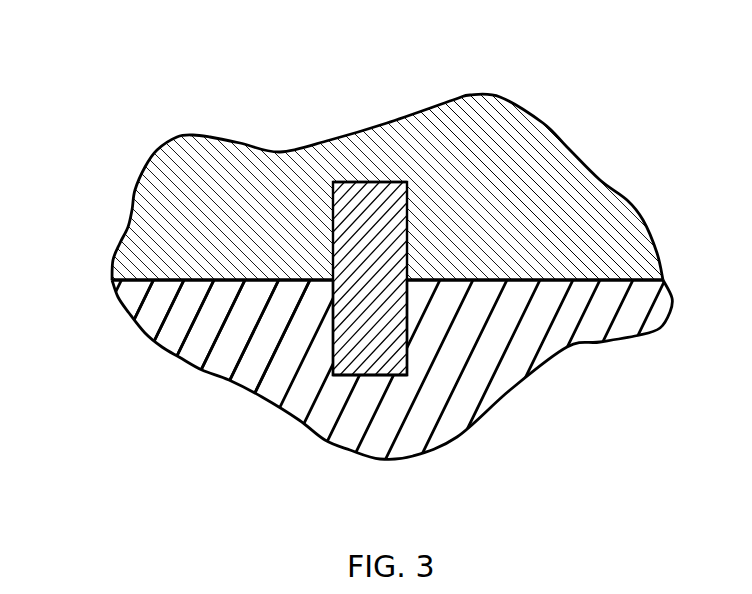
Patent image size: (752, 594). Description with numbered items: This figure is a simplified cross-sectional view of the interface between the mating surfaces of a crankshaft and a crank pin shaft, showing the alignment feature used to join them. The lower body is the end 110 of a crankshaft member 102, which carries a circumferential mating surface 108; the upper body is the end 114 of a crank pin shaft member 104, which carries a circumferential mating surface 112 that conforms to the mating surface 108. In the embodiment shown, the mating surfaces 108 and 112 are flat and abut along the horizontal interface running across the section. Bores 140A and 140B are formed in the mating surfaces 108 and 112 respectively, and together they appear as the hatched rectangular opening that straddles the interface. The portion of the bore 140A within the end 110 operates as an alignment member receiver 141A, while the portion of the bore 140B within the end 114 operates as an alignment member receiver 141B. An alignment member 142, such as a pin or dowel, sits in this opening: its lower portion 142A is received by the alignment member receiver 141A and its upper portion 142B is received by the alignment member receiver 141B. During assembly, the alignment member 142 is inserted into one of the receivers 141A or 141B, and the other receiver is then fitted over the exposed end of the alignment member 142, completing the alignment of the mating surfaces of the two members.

The crankshaft member 102 is at (660, 328).
The crank pin shaft member 104 is at (157, 177).
The mating surface 108 is at (617, 273).
The end 110 is at (244, 362).
The mating surface 112 is at (575, 283).
The end 114 is at (532, 137).
The bore 140A is at (407, 333).
The bore 140B is at (330, 227).
The alignment member receiver 141A is at (315, 363).
The alignment member receiver 141B is at (440, 172).
The alignment member 142 is at (350, 312).
The portion of alignment member 142A is at (353, 358).
The portion of alignment member 142B is at (368, 190).